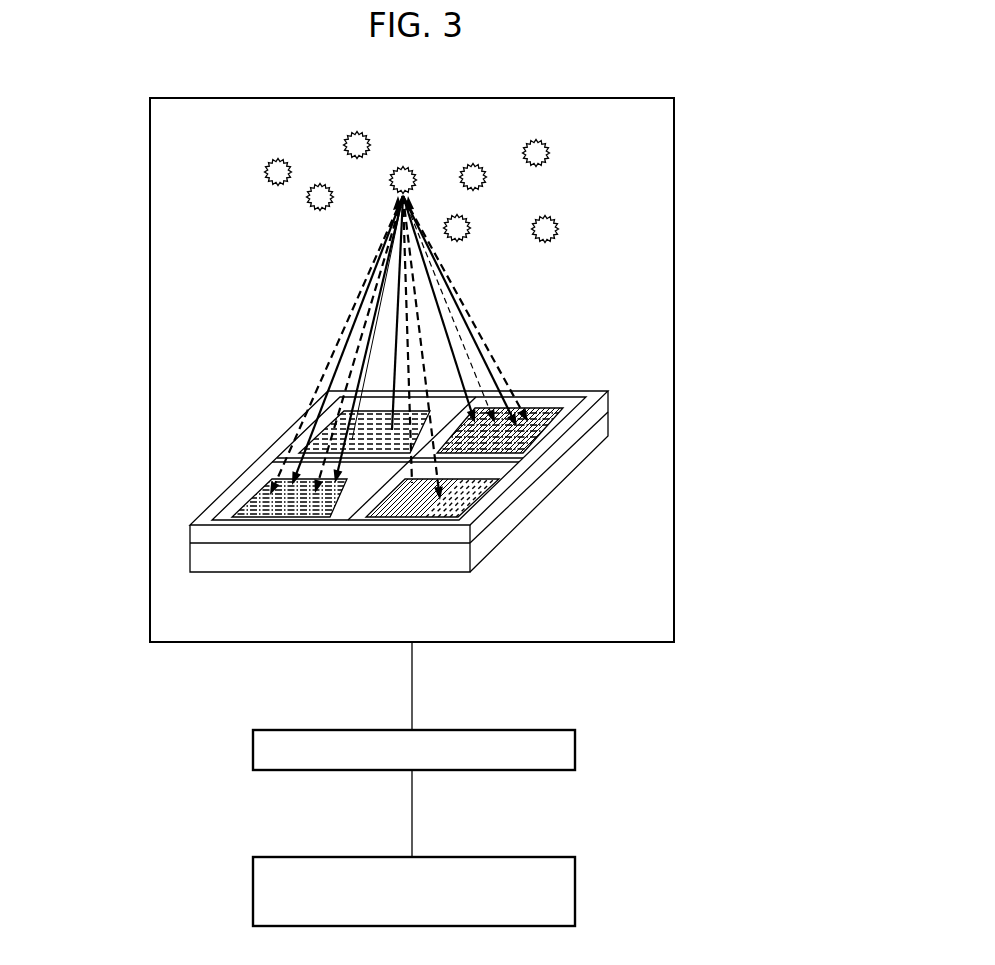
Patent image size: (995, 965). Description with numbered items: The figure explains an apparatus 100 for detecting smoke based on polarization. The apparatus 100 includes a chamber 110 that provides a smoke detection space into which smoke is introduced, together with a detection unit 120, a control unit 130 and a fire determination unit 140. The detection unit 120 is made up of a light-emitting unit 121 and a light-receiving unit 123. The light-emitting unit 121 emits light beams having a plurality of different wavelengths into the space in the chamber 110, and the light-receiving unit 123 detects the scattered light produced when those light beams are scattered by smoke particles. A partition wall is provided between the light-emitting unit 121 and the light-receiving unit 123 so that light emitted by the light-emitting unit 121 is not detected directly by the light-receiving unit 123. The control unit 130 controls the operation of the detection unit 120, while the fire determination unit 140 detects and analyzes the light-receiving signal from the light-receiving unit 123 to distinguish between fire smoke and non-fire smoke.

The apparatus for detecting smoke based on polarization 100 is at (107, 90).
The chamber 110 is at (674, 281).
The detection unit 120 is at (240, 537).
The light-emitting unit 121 is at (323, 377).
The light-receiving unit 123 is at (527, 430).
The control unit 130 is at (576, 746).
The fire determination unit 140 is at (576, 872).